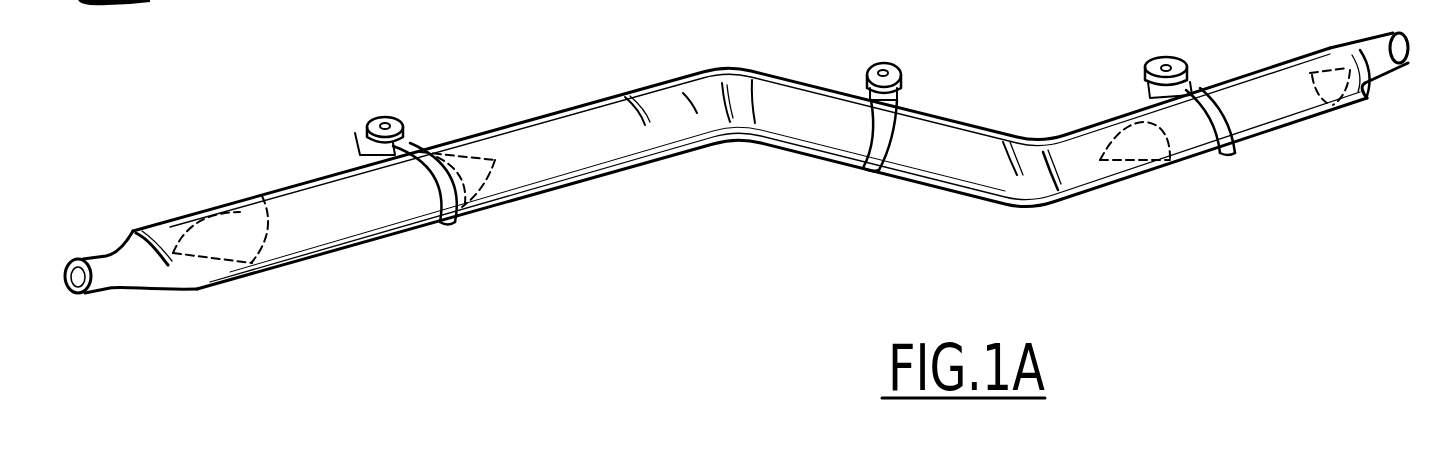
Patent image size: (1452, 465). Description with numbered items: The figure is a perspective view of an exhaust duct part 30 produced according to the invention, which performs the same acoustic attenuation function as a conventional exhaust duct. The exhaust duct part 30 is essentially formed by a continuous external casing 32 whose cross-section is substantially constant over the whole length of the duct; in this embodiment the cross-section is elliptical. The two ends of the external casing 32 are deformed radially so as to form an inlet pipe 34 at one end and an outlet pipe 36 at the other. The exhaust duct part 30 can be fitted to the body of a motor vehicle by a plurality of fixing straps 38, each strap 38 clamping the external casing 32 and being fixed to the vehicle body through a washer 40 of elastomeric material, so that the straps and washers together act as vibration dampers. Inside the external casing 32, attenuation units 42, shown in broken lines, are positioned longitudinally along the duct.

The exhaust duct part 30 is at (719, 63).
The external casing 32 is at (783, 103).
The inlet pipe 34 is at (1390, 70).
The outlet pipe 36 is at (103, 257).
The fixing strap 38 is at (443, 152).
The washer 40 is at (386, 122).
The attenuation unit 42 is at (262, 195).